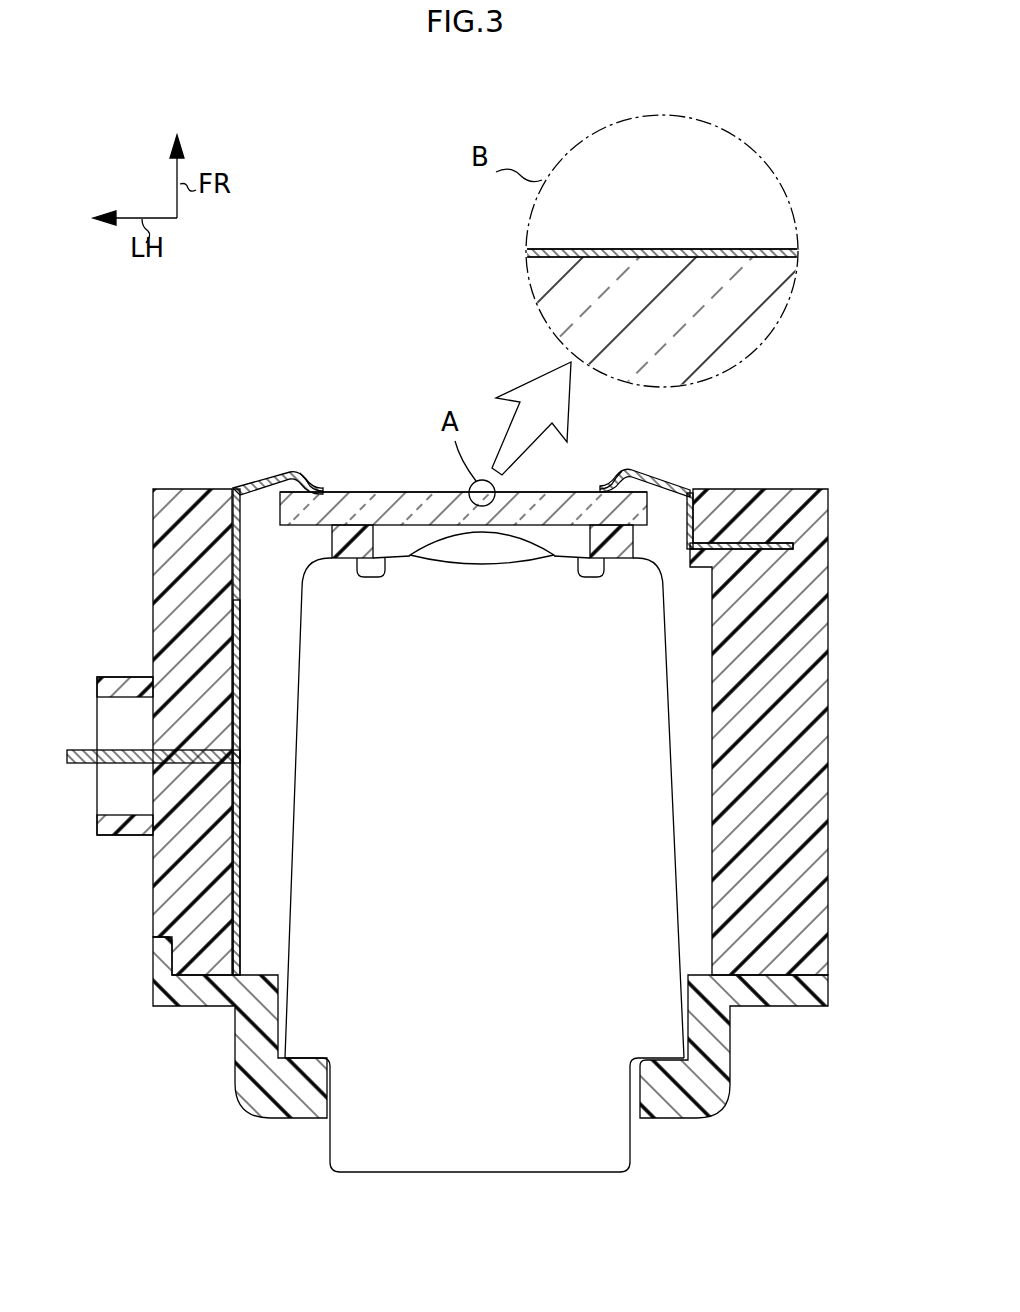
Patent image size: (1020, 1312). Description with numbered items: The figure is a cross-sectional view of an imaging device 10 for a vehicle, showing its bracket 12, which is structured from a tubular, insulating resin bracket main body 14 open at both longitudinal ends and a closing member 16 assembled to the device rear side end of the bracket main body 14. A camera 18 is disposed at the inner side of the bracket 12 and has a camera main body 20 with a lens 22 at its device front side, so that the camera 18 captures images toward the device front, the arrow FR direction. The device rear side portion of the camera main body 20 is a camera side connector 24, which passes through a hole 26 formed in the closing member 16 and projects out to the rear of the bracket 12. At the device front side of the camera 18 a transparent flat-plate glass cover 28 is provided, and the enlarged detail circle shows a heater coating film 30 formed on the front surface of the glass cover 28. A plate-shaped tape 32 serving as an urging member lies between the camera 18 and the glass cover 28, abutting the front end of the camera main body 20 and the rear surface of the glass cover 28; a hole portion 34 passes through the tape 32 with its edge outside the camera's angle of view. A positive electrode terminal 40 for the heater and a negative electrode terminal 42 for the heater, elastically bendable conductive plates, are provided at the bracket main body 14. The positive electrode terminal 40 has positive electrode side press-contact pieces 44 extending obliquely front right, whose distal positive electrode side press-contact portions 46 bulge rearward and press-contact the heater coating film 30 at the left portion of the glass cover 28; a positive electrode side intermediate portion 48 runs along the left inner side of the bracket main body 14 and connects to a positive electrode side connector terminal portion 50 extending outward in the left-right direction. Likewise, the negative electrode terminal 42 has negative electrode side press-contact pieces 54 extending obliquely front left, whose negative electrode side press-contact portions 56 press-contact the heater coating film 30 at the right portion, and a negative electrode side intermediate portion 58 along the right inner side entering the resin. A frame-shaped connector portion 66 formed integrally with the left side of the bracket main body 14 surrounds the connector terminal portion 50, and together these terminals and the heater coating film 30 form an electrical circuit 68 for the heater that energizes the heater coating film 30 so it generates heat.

The imaging device for a vehicle 10 is at (845, 405).
The bracket 12 is at (850, 732).
The bracket main body 14 is at (829, 830).
The closing member 16 is at (731, 1047).
The camera 18 is at (286, 635).
The camera main body 20 is at (298, 862).
The lens 22 is at (485, 550).
The camera side connector 24 is at (485, 1172).
The hole 26 is at (630, 1092).
The glass cover 28 is at (398, 506).
The heater coating film 30 is at (352, 491).
The tape 32 is at (322, 556).
The hole portion 34 is at (585, 562).
The positive electrode terminal for the heater 40 is at (240, 458).
The negative electrode terminal for the heater 42 is at (700, 456).
The positive electrode side press-contact piece 44 is at (281, 475).
The positive electrode side press-contact portion 46 is at (306, 484).
The positive electrode side intermediate portion 48 is at (243, 678).
The positive electrode side connector terminal portion 50 is at (118, 742).
The negative electrode side press-contact piece 54 is at (644, 478).
The negative electrode side press-contact portion 56 is at (614, 486).
The negative electrode side intermediate portion 58 is at (688, 541).
The connector portion 66 is at (124, 835).
The electrical circuit for the heater 68 is at (253, 575).